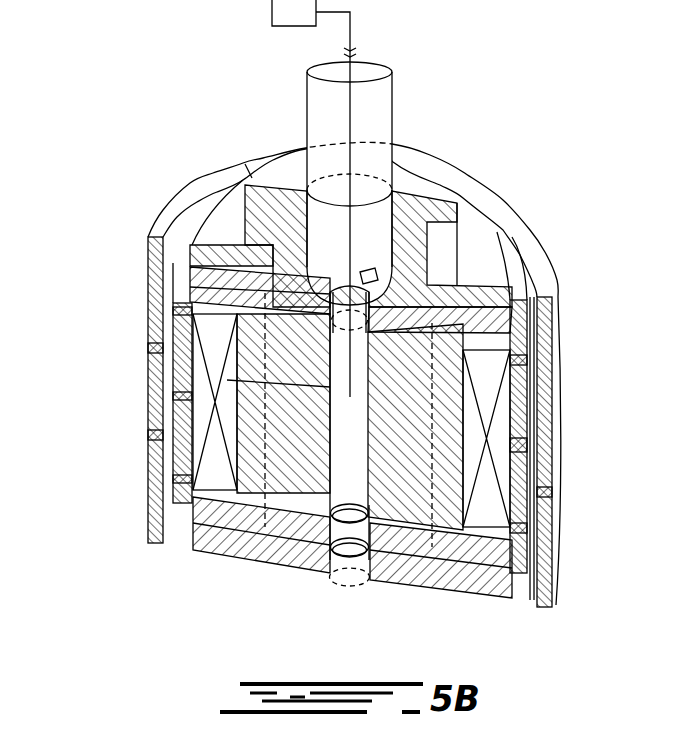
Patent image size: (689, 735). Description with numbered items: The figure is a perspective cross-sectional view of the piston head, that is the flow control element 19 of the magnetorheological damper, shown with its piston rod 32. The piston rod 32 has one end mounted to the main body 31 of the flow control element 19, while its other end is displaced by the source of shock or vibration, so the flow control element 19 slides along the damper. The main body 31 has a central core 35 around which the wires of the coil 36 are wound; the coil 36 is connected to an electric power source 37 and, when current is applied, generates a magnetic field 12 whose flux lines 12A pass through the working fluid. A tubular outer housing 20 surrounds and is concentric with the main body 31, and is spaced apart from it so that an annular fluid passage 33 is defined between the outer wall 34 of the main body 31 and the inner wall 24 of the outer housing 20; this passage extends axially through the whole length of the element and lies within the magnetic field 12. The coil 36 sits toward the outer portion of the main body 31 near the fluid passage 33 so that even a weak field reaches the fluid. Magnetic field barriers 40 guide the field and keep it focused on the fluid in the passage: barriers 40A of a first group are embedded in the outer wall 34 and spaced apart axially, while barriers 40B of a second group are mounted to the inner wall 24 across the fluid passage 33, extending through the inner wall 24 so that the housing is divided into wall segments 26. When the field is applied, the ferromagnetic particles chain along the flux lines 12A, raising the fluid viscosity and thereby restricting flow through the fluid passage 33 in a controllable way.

The magnetic field 12 is at (262, 540).
The flux lines 12A is at (183, 288).
The flow control element 19 is at (433, 160).
The outer housing 20 is at (183, 185).
The inner wall 24 is at (175, 242).
The wall segments 26 is at (148, 490).
The main body 31 is at (470, 222).
The piston rod 32 is at (307, 89).
The fluid passage 33 is at (175, 505).
The outer wall 34 is at (550, 303).
The central core 35 is at (303, 487).
The coil 36 is at (208, 550).
The electric power source 37 is at (314, 198).
The magnetic field barriers 40 is at (148, 433).
The barriers of the first group 40A is at (555, 297).
The barriers of the second group 40B is at (148, 345).